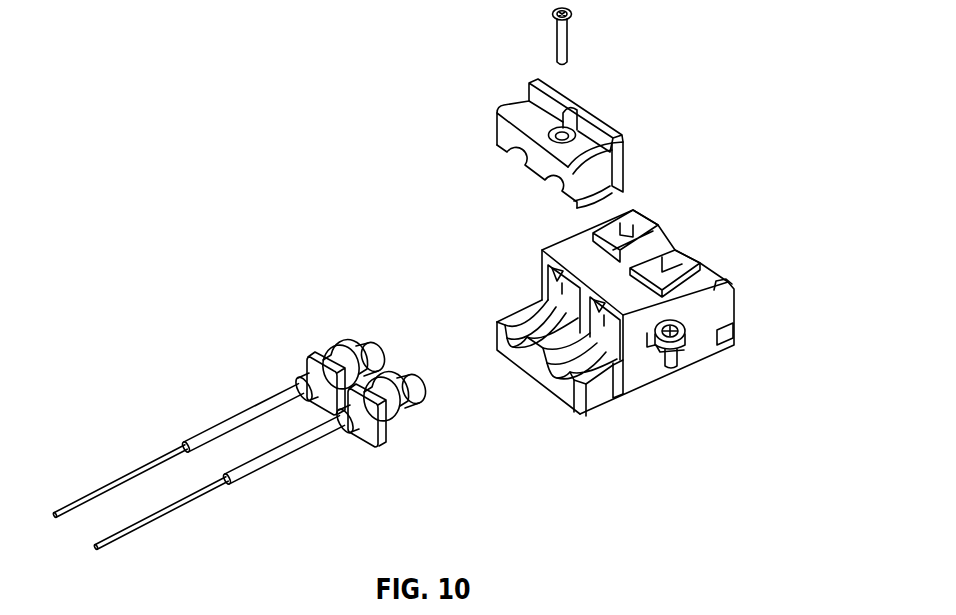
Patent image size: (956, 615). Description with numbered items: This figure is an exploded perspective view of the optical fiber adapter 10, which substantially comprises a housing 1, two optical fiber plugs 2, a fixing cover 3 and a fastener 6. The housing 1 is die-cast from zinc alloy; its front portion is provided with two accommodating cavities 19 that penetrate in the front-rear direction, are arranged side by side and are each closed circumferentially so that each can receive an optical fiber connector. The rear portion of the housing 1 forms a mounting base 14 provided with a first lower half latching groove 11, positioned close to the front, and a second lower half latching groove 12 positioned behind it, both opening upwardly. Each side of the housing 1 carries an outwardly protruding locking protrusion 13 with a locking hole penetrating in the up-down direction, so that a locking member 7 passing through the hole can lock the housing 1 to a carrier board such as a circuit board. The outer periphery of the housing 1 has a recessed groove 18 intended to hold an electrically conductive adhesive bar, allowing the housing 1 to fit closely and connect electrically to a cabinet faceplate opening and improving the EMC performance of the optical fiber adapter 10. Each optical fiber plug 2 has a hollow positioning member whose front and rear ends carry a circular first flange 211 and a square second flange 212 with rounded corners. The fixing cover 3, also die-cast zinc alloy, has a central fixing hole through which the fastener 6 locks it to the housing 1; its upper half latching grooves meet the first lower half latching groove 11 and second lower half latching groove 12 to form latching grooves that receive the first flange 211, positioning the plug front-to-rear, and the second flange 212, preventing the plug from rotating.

The optical fiber adapter 10 is at (356, 104).
The housing 1 is at (619, 356).
The optical fiber plug 2 is at (241, 407).
The fixing cover 3 is at (625, 168).
The fastener 6 is at (566, 50).
The locking member 7 is at (682, 323).
The first lower half latching groove 11 is at (533, 310).
The second lower half latching groove 12 is at (513, 320).
The locking protrusion 13 is at (683, 347).
The mounting base 14 is at (568, 403).
The recessed groove 18 is at (615, 398).
The accommodating cavity 19 is at (548, 292).
The first flange 211 is at (342, 348).
The second flange 212 is at (307, 357).